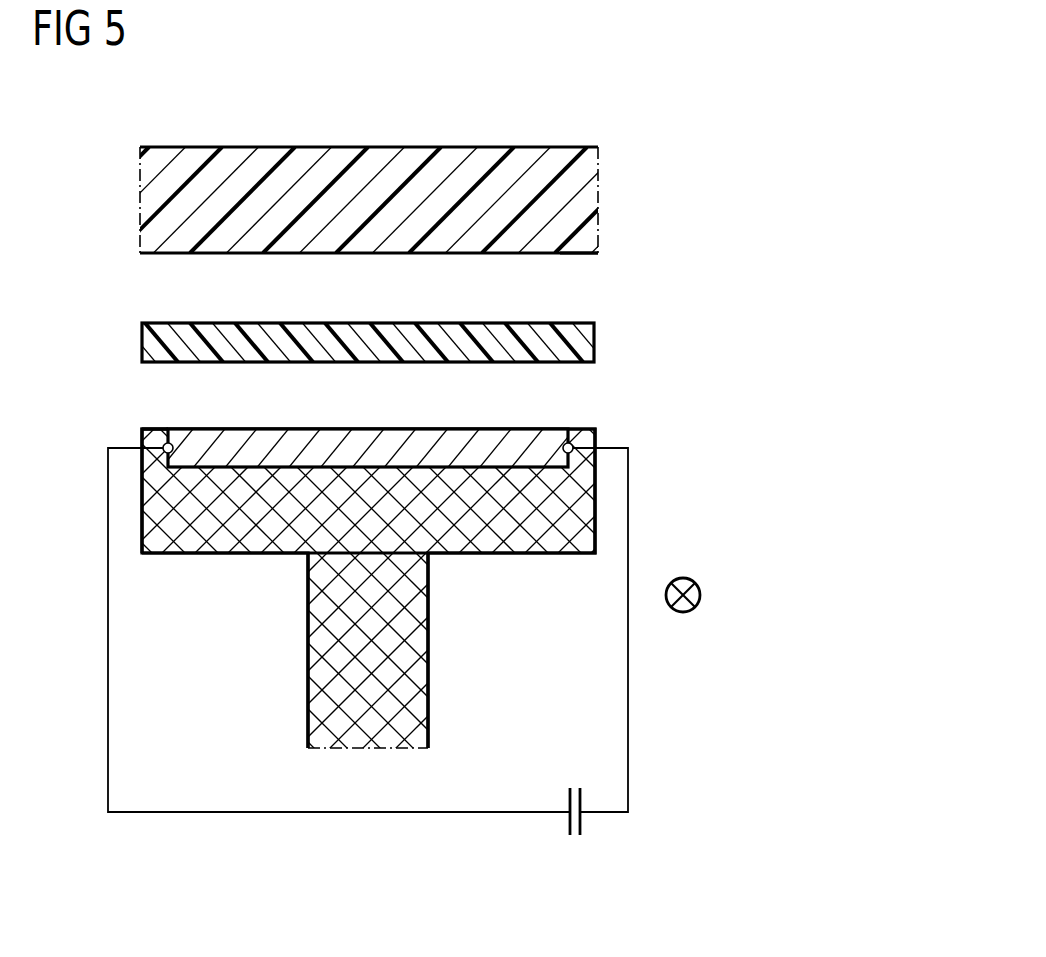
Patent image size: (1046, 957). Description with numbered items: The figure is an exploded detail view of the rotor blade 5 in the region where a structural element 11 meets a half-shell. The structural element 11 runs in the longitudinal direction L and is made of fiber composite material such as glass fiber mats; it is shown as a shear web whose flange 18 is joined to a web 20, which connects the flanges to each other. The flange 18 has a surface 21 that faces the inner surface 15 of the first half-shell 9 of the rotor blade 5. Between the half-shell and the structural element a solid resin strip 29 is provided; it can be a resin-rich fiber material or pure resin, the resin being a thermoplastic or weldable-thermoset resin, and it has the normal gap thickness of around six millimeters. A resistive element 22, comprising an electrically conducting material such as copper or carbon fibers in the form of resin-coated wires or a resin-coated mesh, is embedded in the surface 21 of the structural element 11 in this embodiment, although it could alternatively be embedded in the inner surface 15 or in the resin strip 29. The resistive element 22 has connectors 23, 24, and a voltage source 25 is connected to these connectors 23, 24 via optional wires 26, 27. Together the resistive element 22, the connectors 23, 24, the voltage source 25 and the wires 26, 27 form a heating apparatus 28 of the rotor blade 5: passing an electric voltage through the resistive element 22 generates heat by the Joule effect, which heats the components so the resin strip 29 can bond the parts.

The rotor blade 5 is at (691, 81).
The first half-shell 9 is at (391, 132).
The inner surface 15 is at (580, 250).
The resin strip 29 is at (581, 342).
The structural element 11 is at (368, 478).
The flange 18 is at (207, 558).
The web 20 is at (415, 658).
The resistive element 22 is at (390, 438).
The surface 21 is at (168, 431).
The connector 23 is at (172, 441).
The connector 24 is at (575, 441).
The wire 26 is at (108, 667).
The wire 27 is at (628, 670).
The heating apparatus 28 is at (196, 830).
The voltage source 25 is at (568, 818).
The longitudinal direction L is at (700, 594).